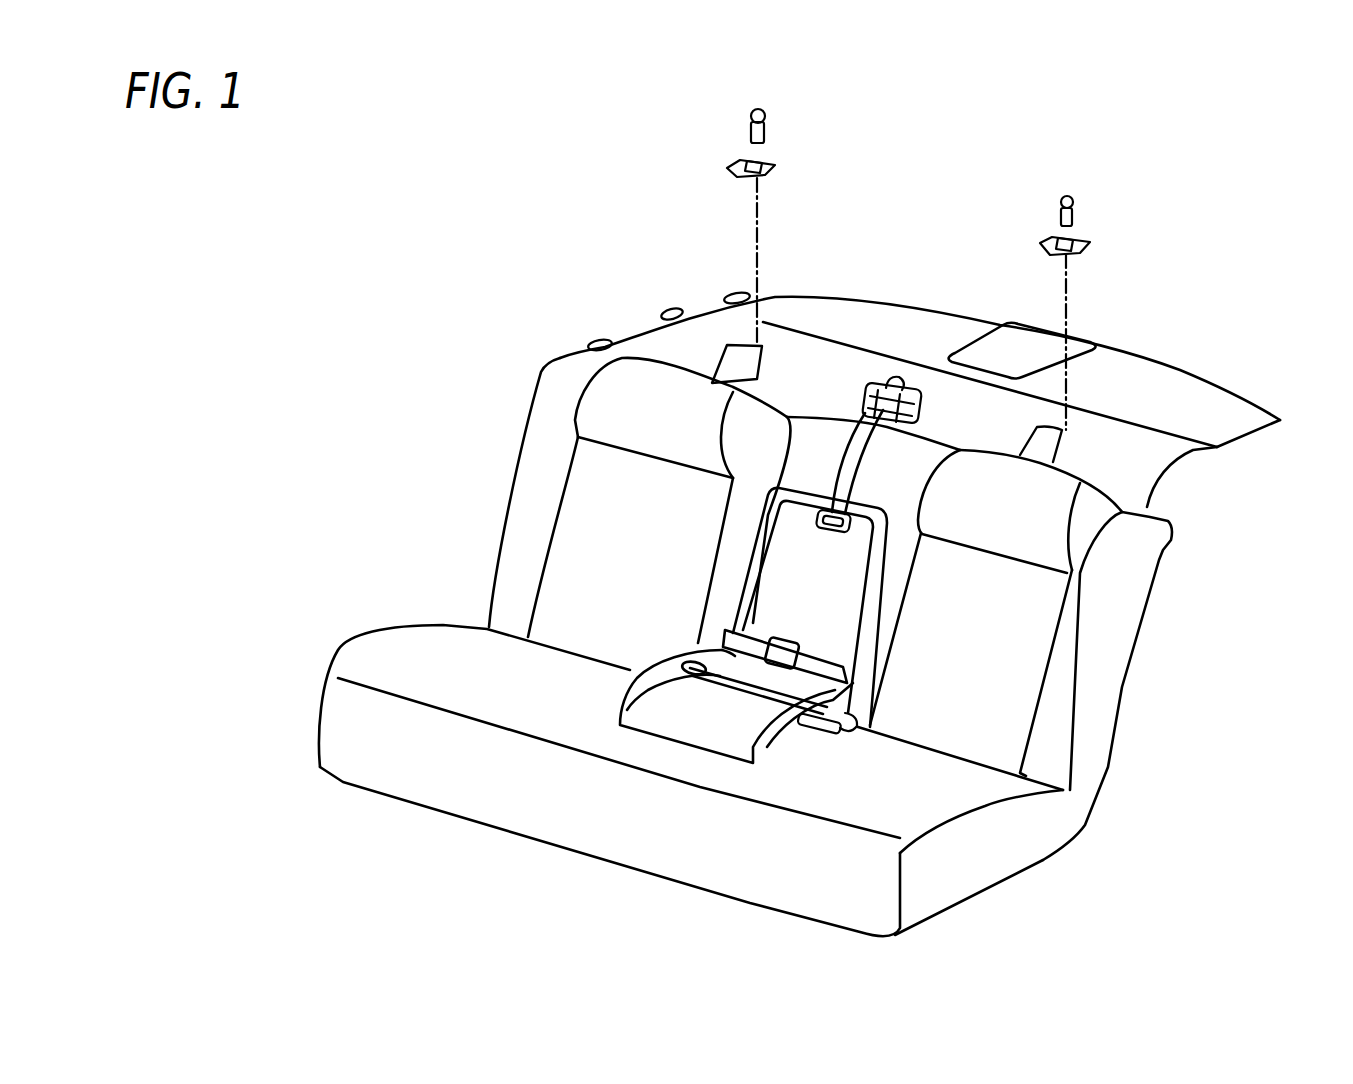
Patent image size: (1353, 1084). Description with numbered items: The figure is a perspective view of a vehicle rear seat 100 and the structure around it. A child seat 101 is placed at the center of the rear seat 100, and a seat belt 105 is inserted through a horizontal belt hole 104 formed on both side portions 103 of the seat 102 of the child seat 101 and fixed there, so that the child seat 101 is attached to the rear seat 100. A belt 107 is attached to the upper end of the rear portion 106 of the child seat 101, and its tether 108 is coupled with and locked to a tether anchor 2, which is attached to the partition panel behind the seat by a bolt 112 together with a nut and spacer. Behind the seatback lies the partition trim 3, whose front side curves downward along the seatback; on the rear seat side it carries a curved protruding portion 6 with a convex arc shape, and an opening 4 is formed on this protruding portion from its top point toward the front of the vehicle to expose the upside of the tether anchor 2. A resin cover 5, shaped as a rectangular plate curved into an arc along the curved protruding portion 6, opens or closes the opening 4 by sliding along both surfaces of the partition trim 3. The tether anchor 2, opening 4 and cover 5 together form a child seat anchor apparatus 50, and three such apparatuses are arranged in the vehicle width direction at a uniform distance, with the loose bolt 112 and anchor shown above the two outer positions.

The rear seat 100 is at (417, 402).
The child seat 101 is at (686, 572).
The seat 102 is at (675, 732).
The side portions 103 is at (660, 658).
The horizontal belt hole 104 is at (853, 708).
The seat belt 105 is at (870, 707).
The rear portion 106 is at (833, 580).
The belt 107 is at (841, 463).
The tether 108 is at (897, 390).
The tether anchor 2 is at (767, 168).
The partition trim 3 is at (1160, 363).
The opening 4 is at (875, 379).
The cover 5 is at (732, 357).
The child seat anchor apparatus 50 is at (702, 348).
The curved protruding portion 6 is at (1153, 450).
The bolt 112 is at (766, 122).